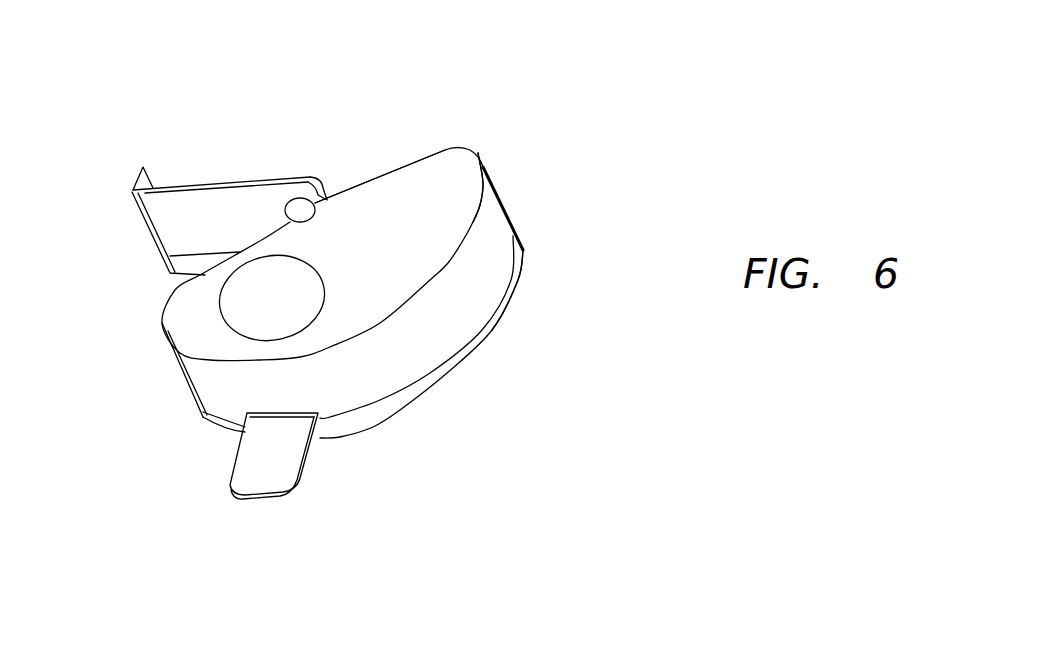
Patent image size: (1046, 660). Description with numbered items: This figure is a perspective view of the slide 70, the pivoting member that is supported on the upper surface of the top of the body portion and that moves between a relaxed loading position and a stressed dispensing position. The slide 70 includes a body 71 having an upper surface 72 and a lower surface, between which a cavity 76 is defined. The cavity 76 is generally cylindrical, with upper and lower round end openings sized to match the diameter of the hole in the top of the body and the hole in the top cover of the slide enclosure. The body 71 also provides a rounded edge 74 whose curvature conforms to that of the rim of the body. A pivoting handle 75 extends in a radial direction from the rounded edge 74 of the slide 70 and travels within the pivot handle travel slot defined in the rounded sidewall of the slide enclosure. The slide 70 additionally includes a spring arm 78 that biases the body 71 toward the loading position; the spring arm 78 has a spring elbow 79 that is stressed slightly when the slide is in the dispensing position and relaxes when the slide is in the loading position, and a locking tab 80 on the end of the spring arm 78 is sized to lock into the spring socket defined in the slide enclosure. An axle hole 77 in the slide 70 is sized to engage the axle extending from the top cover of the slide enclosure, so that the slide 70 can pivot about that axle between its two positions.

The slide 70 is at (545, 378).
The body 71 is at (430, 150).
The upper surface 72 is at (447, 207).
The rounded edge 74 is at (488, 267).
The pivoting handle 75 is at (275, 455).
The cavity 76 is at (270, 303).
The axle hole 77 is at (300, 210).
The spring arm 78 is at (257, 167).
The spring elbow 79 is at (326, 175).
The locking tab 80 is at (153, 167).